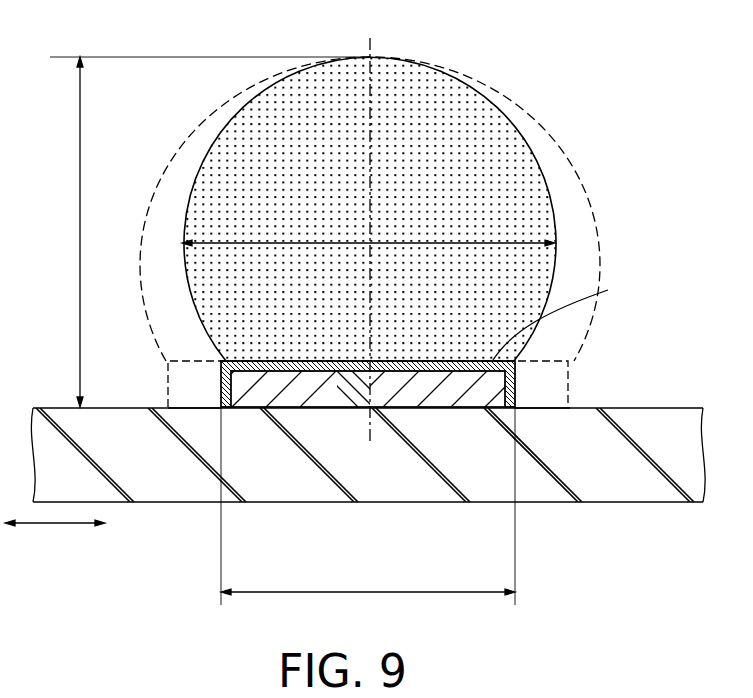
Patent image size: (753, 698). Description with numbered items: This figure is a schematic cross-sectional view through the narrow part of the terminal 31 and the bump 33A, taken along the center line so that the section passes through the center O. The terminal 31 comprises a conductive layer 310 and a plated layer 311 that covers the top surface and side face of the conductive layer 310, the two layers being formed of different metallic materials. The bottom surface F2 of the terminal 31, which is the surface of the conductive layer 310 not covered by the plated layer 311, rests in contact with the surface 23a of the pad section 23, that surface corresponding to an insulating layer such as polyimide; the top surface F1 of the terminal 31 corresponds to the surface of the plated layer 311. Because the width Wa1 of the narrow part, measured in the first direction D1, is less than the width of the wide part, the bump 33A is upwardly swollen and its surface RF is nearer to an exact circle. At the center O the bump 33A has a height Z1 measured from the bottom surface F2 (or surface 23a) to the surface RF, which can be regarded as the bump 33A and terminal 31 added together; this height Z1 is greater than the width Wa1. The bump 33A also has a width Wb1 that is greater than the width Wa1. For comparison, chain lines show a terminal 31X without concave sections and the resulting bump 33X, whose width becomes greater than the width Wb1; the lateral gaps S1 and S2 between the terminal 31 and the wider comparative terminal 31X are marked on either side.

The pad section 23 is at (543, 492).
The surface of the pad section 23a is at (680, 407).
The terminal 31 is at (359, 474).
The conductive layer 310 is at (289, 400).
The plated layer 311 is at (337, 365).
The terminal according to a comparative example 31X is at (568, 372).
The bump 33A is at (523, 163).
The bump according to a comparative example 33X is at (595, 220).
The surface of the bump RF is at (482, 92).
The top surface of the terminal F1 is at (565, 315).
The bottom surface of the terminal F2 is at (474, 408).
The center O is at (370, 227).
The height Z1 is at (207, 232).
The width of the bump Wb1 is at (368, 230).
The width of the narrow part Wa1 is at (368, 517).
The first direction D1 is at (55, 539).
The left gap S1 is at (221, 383).
The right gap S2 is at (515, 392).